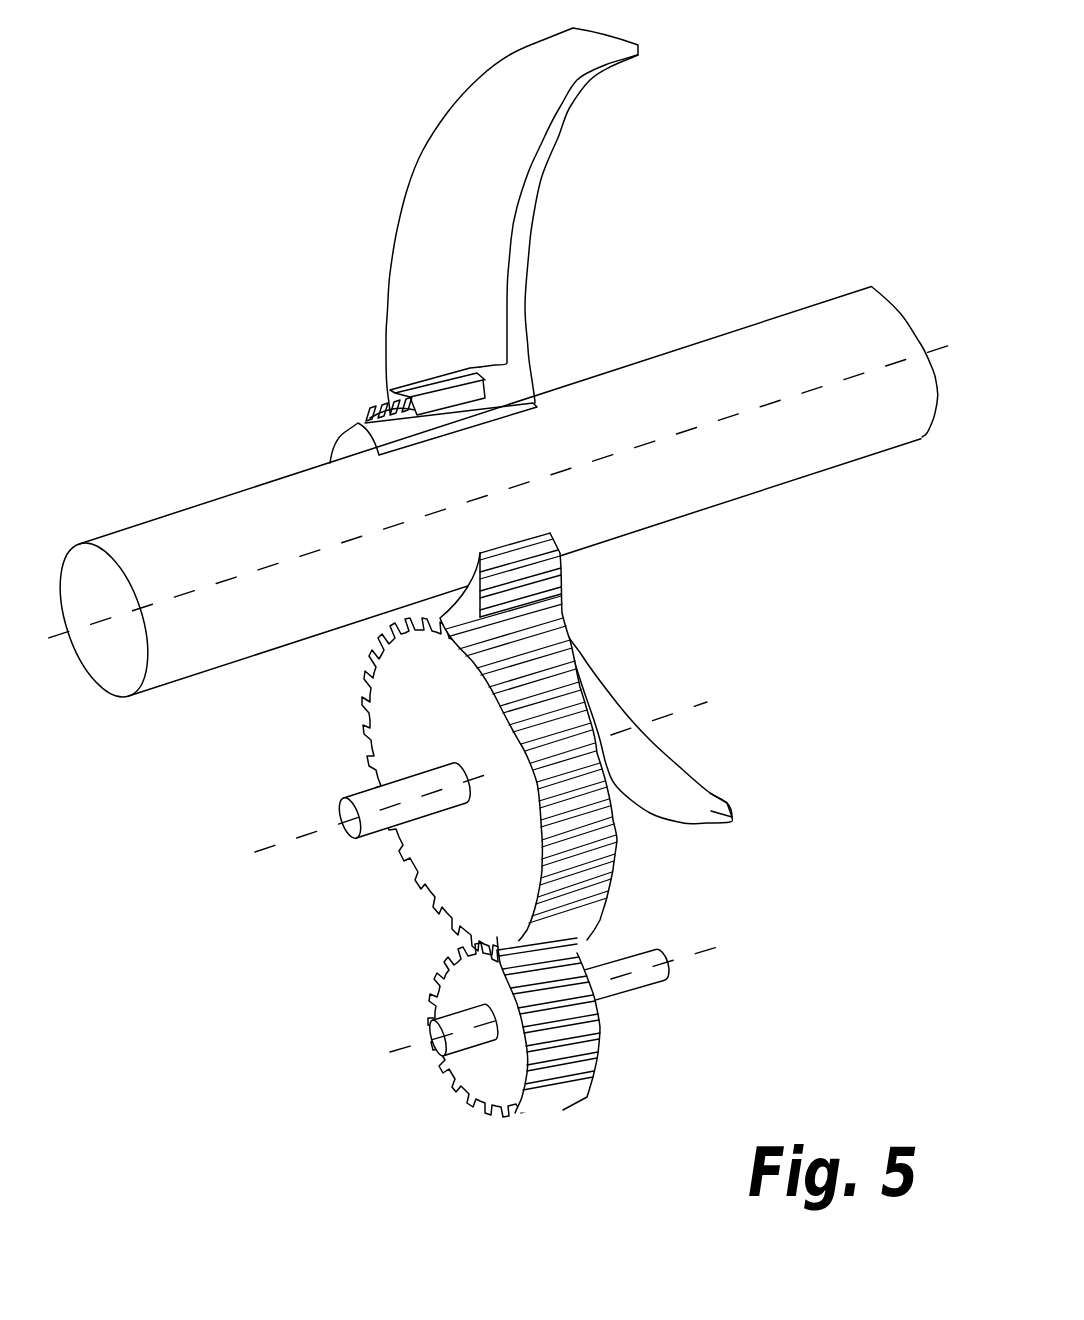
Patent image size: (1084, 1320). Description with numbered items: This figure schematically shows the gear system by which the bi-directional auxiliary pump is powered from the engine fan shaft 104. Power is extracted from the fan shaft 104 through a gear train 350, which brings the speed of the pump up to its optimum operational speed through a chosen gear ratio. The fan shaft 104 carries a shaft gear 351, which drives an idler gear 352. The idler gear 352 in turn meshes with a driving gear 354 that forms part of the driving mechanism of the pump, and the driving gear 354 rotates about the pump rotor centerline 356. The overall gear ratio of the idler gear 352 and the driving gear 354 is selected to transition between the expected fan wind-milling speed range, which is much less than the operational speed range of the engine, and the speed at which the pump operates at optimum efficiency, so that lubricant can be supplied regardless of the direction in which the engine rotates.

The fan shaft 104 is at (111, 621).
The gear train 350 is at (182, 871).
The shaft gear 351 is at (368, 400).
The idler gear 352 is at (611, 835).
The driving gear 354 is at (477, 1100).
The pump rotor centerline 356 is at (625, 975).